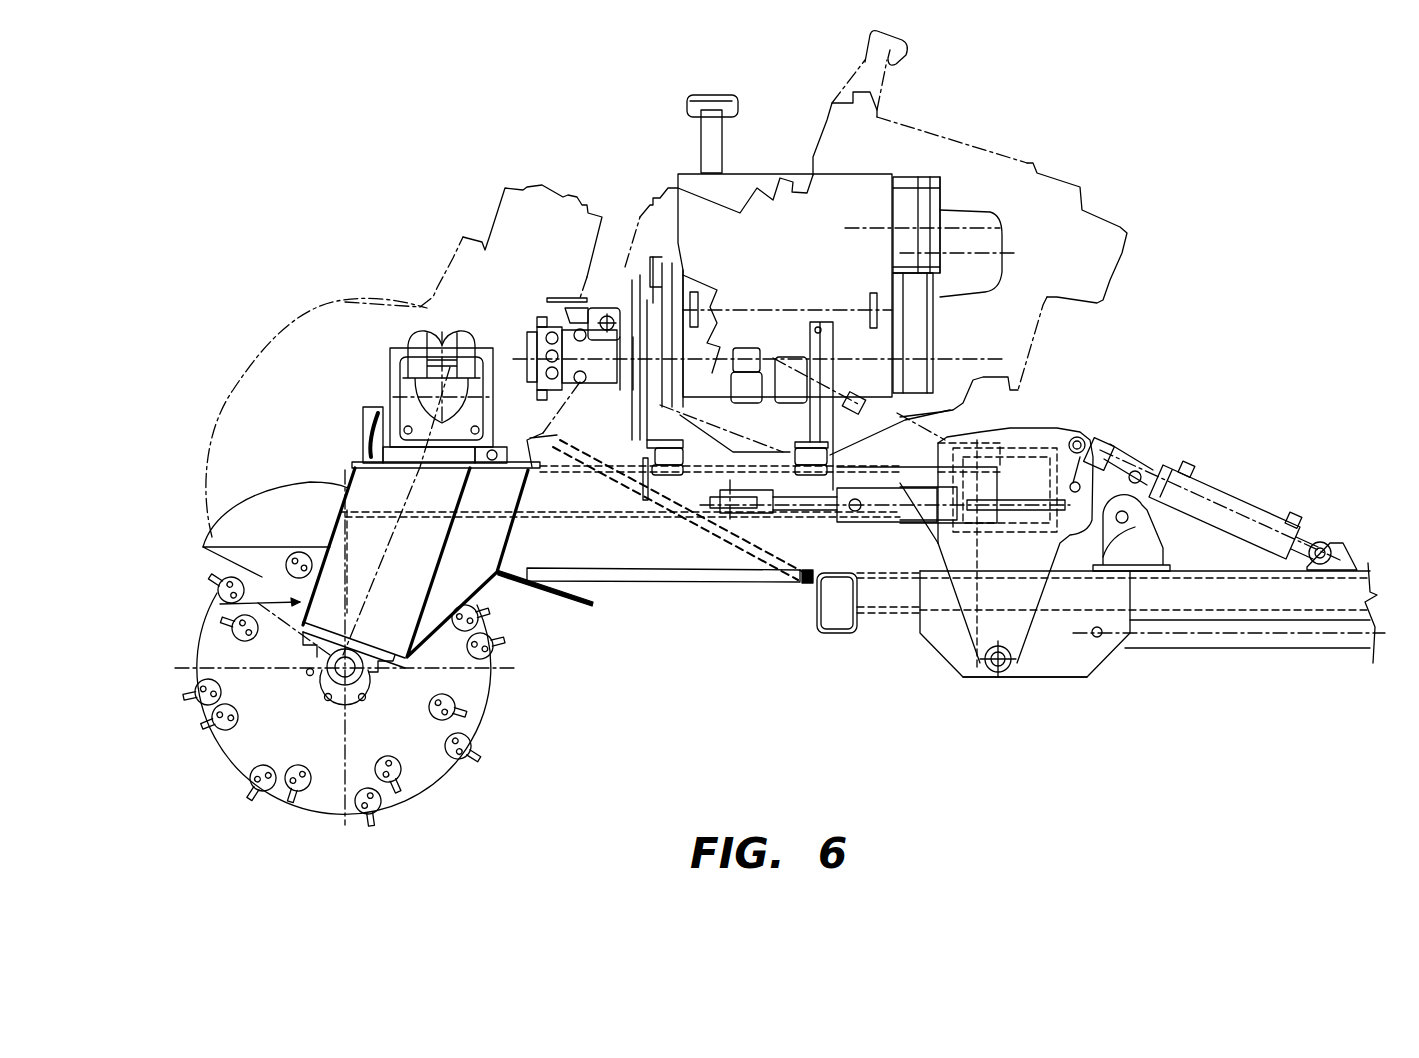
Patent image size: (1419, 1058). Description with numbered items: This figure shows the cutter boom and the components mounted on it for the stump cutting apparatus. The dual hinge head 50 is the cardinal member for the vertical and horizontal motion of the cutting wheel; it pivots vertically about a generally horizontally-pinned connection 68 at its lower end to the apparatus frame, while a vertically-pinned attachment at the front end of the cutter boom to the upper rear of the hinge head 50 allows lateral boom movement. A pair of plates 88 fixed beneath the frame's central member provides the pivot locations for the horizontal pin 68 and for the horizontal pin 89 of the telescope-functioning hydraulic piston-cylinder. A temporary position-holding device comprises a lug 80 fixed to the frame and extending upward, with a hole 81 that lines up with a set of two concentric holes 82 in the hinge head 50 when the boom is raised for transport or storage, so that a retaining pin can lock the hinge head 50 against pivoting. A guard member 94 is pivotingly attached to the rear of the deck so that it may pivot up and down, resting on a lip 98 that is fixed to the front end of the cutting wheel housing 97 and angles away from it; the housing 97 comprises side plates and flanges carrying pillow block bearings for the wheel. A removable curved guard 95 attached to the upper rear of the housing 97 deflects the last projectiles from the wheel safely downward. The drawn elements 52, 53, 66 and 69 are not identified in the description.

The dual hinge head 50 is at (958, 630).
The cutter wheel 52 is at (207, 733).
The cutting tooth 53 is at (205, 700).
The wheel outline in raised position 66 is at (243, 377).
The horizontally-pinned connection 68 is at (1002, 666).
The cutting teeth 69 is at (320, 557).
The lug 80 is at (1167, 553).
The hole 81 is at (1125, 523).
The concentric holes 82 is at (1075, 482).
The plates 88 is at (1053, 680).
The horizontal pin 89 is at (1097, 637).
The guard member 94 is at (697, 583).
The removable guard 95 is at (310, 481).
The cutting wheel housing 97 is at (220, 604).
The lip 98 is at (578, 601).